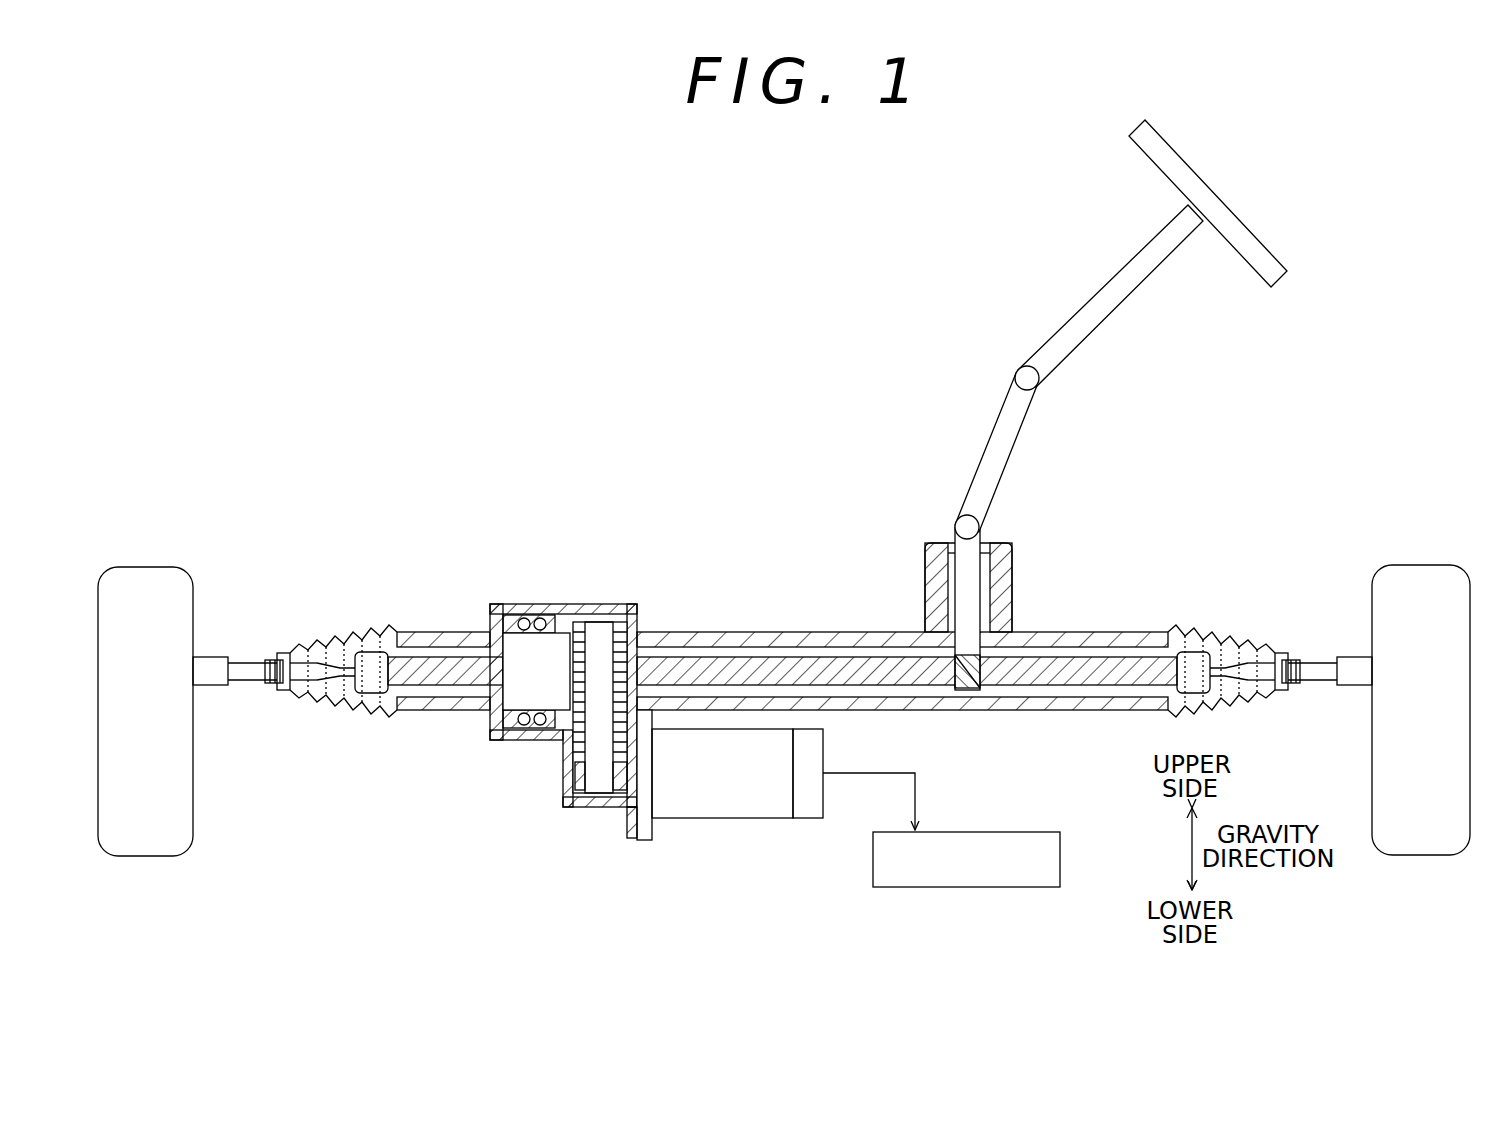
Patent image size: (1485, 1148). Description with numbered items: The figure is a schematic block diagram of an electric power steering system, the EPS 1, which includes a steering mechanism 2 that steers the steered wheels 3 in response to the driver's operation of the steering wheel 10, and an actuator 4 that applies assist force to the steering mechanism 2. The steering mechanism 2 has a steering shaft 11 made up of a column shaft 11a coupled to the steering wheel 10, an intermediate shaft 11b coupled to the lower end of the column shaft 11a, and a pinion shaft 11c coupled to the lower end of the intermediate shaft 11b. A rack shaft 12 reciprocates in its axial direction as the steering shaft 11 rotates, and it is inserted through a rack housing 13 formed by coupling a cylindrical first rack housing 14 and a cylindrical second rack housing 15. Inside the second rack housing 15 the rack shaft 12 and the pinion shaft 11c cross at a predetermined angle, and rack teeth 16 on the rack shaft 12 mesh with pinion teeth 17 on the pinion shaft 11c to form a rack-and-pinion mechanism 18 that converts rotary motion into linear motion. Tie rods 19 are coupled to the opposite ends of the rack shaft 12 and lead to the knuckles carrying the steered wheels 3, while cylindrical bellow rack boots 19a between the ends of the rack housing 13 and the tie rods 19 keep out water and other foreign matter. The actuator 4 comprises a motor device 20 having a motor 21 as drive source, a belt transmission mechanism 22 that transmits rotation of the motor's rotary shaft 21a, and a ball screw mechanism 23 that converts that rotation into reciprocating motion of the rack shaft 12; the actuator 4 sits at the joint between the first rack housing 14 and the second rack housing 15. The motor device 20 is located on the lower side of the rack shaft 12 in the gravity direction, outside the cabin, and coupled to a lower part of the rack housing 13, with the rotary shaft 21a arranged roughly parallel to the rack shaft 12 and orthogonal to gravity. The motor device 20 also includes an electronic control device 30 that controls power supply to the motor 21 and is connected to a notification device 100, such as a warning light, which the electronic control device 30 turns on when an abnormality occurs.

The EPS 1 is at (374, 224).
The steering mechanism 2 is at (1022, 537).
The steered wheels 3 is at (150, 565).
The actuator 4 is at (485, 850).
The steering wheel 10 is at (1182, 150).
The steering shaft 11 is at (1037, 372).
The column shaft 11a is at (1080, 297).
The intermediate shaft 11b is at (985, 440).
The pinion shaft 11c is at (930, 540).
The rack shaft 12 is at (736, 654).
The rack housing 13 is at (515, 558).
The first rack housing 14 is at (537, 603).
The second rack housing 15 is at (607, 603).
The rack teeth 16 is at (1040, 710).
The pinion teeth 17 is at (976, 710).
The rack-and-pinion mechanism 18 is at (952, 692).
The tie rods 19 is at (246, 684).
The rack boots 19a is at (325, 641).
The motor device 20 is at (683, 848).
The motor 21 is at (738, 818).
The rotary shaft 21a is at (621, 808).
The belt transmission mechanism 22 is at (565, 787).
The ball screw mechanism 23 is at (503, 735).
The electronic control device 30 is at (811, 818).
The notification device 100 is at (1045, 830).